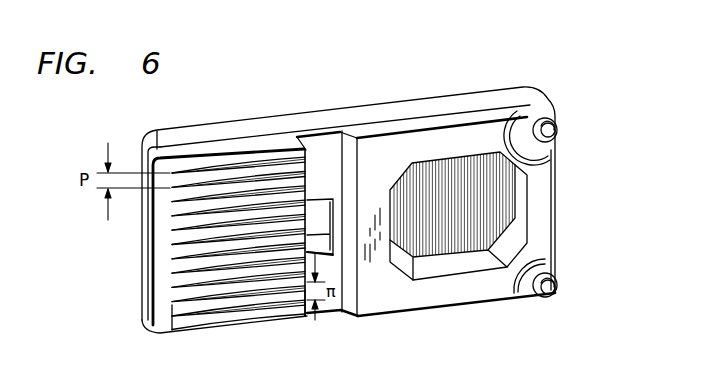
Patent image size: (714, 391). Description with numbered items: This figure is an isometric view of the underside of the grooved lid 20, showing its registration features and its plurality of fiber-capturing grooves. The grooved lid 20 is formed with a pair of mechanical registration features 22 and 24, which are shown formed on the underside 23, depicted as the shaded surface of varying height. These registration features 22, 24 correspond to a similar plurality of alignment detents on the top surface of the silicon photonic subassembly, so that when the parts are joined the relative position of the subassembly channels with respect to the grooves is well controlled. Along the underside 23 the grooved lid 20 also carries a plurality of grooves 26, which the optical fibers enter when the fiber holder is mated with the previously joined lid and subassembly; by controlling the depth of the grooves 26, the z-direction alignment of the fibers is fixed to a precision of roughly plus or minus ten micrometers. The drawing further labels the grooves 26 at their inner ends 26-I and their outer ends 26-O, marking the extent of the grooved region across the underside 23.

The grooved lid 20 is at (229, 125).
The registration feature 22 is at (551, 130).
The underside 23 is at (328, 152).
The registration feature 24 is at (551, 288).
The grooves 26 is at (247, 288).
The inner end of fins 26-I is at (170, 322).
The outer end of fins 26-O is at (300, 312).